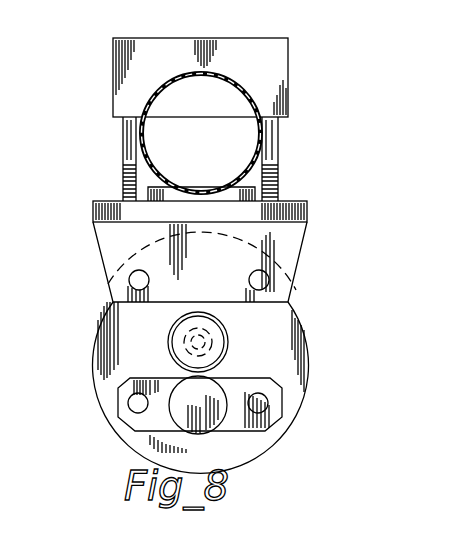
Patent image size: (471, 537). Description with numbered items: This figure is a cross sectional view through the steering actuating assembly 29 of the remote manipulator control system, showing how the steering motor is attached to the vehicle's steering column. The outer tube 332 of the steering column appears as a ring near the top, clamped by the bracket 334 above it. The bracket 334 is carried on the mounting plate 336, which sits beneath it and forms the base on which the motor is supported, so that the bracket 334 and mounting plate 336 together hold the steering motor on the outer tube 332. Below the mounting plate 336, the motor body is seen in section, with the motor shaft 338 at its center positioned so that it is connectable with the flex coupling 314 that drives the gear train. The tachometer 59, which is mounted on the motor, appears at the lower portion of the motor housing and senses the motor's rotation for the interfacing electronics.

The actuating assembly 29 is at (66, 186).
The bracket 334 is at (283, 78).
The outer tube 332 is at (270, 163).
The mounting plate 336 is at (307, 212).
The motor shaft 338 is at (206, 336).
The flex coupling 314 is at (228, 352).
The tachometer 59 is at (225, 425).